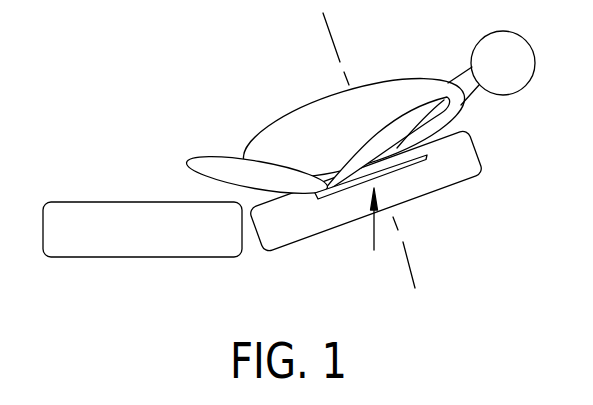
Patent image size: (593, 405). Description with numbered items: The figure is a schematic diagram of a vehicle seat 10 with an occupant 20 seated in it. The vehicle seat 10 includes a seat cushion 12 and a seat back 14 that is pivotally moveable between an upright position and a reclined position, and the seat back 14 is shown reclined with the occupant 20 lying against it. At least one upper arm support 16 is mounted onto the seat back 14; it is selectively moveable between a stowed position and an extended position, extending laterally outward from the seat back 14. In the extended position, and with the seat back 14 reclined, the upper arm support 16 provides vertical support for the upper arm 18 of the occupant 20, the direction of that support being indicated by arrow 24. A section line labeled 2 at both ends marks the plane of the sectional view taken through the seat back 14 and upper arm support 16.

The vehicle seat 10 is at (289, 173).
The seat cushion 12 is at (156, 241).
The seat back 14 is at (294, 232).
The upper arm support 16 is at (393, 167).
The upper arm 18 is at (412, 117).
The occupant 20 is at (341, 140).
The arrow 24 is at (374, 237).
The section line 2- 2 is at (323, 13).